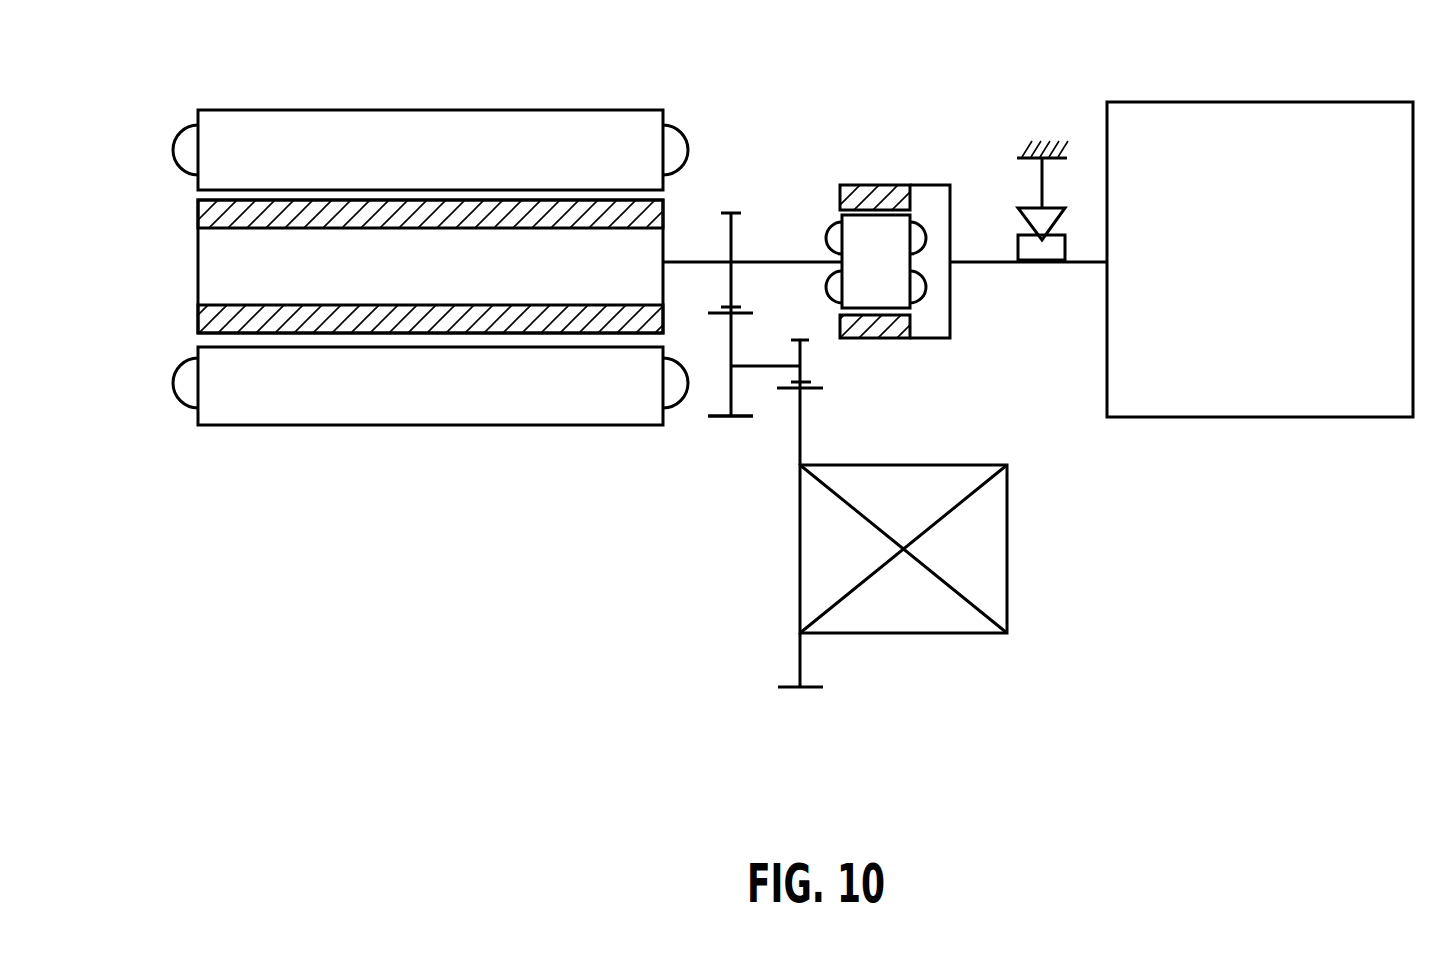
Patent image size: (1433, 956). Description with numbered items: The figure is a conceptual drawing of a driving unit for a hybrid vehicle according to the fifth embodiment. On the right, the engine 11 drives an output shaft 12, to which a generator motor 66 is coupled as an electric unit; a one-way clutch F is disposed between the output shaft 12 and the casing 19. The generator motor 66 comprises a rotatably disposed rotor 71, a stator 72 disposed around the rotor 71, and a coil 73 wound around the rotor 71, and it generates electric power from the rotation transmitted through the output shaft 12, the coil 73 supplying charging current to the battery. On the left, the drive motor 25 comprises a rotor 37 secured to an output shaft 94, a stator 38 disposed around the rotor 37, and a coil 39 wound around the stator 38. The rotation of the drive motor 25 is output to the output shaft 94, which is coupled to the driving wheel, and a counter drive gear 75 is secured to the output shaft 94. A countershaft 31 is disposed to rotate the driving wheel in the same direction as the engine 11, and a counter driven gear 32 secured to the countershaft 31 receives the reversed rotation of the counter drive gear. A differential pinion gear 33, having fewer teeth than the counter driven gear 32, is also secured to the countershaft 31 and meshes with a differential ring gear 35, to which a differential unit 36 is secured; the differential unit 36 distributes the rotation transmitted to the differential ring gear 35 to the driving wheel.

The engine 11 is at (1225, 110).
The output shaft 12 is at (992, 261).
The casing 19 is at (1044, 143).
The drive motor 25 is at (411, 214).
The countershaft 31 is at (750, 367).
The counter driven gear 32 is at (718, 418).
The differential pinion gear 33 is at (794, 339).
The differential ring gear 35 is at (790, 689).
The differential unit 36 is at (935, 620).
The rotor 37 is at (213, 258).
The stator 38 is at (313, 112).
The coil 39 is at (181, 130).
The generator motor 66 is at (877, 213).
The rotor 71 is at (873, 300).
The stator 72 is at (855, 186).
The coil 73 is at (833, 233).
The counter drive gear 75 is at (728, 212).
The output shaft 94 is at (792, 261).